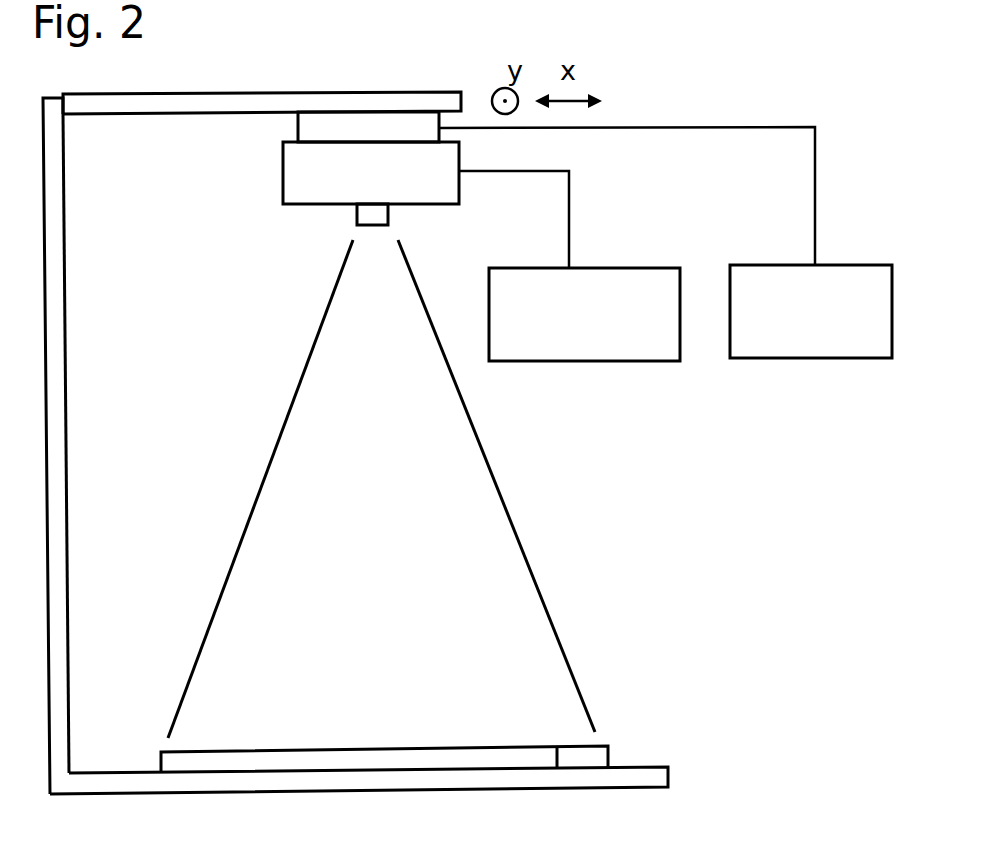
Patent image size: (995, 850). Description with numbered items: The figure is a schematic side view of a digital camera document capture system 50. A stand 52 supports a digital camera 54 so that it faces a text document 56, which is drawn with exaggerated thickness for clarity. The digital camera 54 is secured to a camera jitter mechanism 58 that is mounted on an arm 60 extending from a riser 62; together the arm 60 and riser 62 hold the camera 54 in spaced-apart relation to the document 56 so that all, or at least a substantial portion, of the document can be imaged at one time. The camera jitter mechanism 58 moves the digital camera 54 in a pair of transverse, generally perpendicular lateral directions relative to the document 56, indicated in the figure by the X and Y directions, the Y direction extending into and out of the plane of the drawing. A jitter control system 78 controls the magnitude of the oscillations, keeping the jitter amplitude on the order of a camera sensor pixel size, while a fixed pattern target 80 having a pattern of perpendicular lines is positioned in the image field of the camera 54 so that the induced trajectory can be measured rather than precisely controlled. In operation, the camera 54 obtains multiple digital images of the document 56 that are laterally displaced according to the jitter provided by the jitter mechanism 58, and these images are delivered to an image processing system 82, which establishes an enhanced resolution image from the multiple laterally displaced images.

The digital camera document capture system 50 is at (668, 101).
The stand 52 is at (355, 406).
The digital camera 54 is at (282, 185).
The text document 56 is at (290, 755).
The camera jitter mechanism 58 is at (295, 128).
The arm 60 is at (235, 97).
The riser 62 is at (63, 227).
The jitter control system 78 is at (865, 263).
The fixed pattern target 80 is at (606, 757).
The image processing system 82 is at (625, 267).